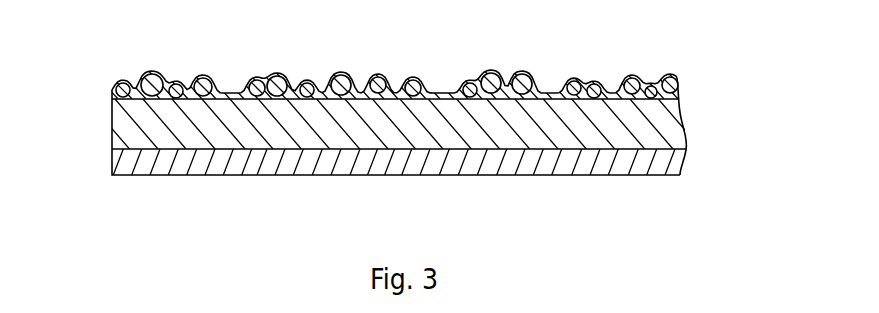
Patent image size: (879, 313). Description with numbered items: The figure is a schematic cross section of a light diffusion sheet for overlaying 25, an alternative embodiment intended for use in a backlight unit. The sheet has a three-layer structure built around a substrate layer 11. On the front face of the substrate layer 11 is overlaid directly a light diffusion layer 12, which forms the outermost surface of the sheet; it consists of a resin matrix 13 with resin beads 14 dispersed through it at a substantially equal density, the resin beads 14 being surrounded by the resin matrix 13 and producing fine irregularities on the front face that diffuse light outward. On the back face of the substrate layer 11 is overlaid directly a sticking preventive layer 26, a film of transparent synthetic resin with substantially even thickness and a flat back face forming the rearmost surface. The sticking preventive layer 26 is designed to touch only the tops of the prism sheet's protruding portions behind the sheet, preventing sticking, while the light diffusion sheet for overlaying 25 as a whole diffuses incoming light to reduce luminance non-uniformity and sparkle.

The substrate layer 11 is at (112, 126).
The light diffusion layer 12 is at (132, 74).
The resin matrix 13 is at (190, 80).
The resin beads 14 is at (342, 74).
The light diffusion sheet for overlaying 25 is at (712, 149).
The sticking preventive layer 26 is at (112, 164).